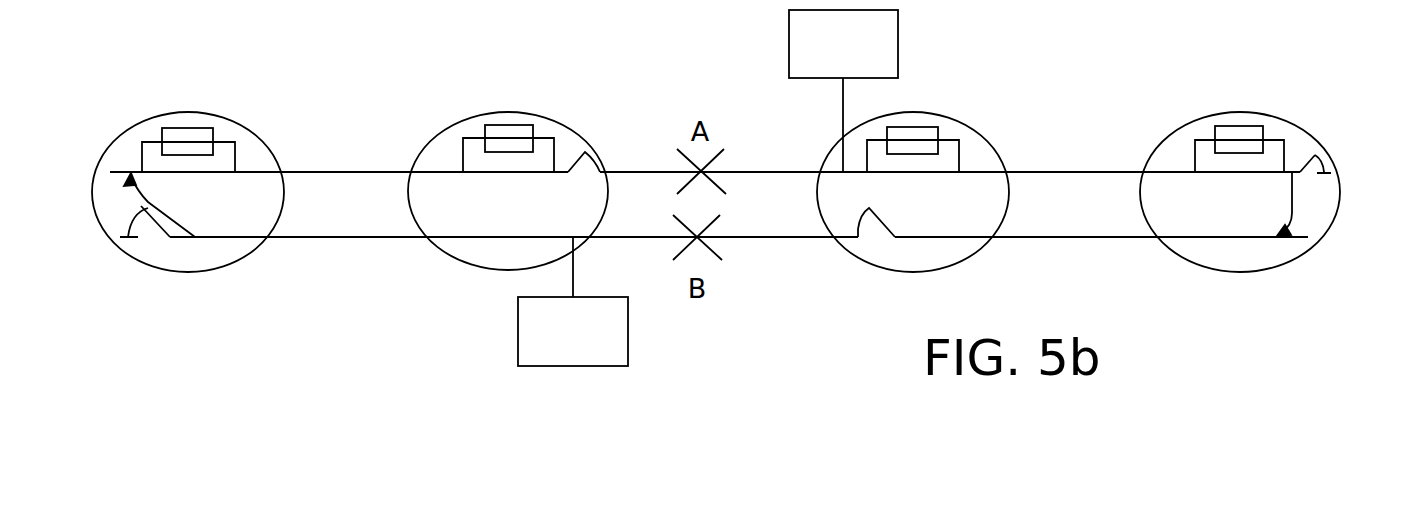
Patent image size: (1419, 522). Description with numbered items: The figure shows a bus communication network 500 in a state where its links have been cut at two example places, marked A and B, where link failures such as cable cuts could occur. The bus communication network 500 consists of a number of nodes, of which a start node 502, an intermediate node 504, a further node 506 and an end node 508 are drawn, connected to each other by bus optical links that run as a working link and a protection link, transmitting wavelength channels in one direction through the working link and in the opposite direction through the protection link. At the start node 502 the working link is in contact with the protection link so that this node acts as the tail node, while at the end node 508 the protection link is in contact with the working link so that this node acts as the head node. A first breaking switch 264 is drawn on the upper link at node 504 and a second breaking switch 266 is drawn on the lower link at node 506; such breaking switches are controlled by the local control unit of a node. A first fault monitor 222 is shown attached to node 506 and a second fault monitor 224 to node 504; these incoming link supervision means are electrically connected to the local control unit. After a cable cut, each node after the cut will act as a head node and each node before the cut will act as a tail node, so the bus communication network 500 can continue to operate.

The bus communication network 500 is at (1398, 59).
The start node 502 is at (188, 167).
The node 504 is at (508, 160).
The node 506 is at (913, 175).
The end node 508 is at (1240, 161).
The first breaking switch 264 is at (575, 148).
The second breaking switch 266 is at (877, 244).
The first fault monitor 222 is at (843, 91).
The second fault monitor 224 is at (573, 301).